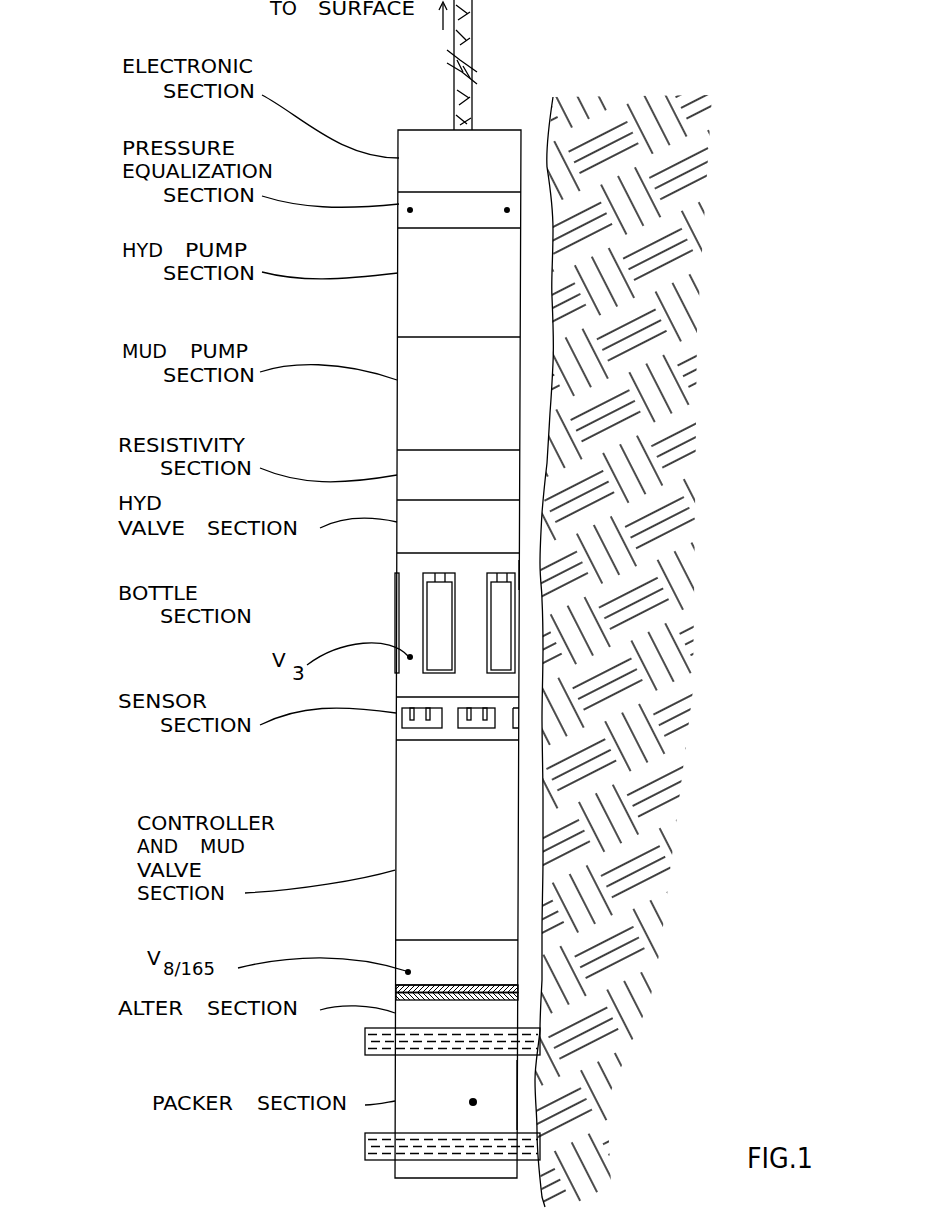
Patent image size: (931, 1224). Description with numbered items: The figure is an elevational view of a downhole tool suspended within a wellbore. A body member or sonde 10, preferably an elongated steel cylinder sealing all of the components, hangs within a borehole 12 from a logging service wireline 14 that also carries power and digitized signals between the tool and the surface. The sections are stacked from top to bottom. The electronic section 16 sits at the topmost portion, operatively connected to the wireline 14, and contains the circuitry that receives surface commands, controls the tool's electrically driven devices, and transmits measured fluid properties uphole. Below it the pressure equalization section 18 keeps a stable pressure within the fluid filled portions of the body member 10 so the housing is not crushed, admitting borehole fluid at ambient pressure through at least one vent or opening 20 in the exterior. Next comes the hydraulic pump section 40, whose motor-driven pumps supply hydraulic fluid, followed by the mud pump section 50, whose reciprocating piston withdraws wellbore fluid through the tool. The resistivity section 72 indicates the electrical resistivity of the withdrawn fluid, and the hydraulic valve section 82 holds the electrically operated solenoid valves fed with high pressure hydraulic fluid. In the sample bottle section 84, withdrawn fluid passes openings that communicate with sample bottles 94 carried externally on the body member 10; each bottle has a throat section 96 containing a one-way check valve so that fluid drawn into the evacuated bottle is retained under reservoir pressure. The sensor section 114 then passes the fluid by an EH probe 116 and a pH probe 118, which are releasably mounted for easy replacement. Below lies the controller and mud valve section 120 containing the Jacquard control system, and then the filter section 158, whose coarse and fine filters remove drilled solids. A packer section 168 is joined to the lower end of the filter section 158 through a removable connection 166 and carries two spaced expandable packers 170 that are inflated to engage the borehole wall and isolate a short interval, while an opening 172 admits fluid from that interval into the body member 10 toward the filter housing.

The body member 10 is at (500, 130).
The borehole 12 is at (548, 198).
The logging service wireline 14 is at (472, 25).
The electronic section 16 is at (473, 175).
The pressure equalization section 18 is at (473, 222).
The vent or opening 20 is at (407, 211).
The hydraulic pump section 40 is at (471, 293).
The mud pump section 50 is at (468, 403).
The resistivity section 72 is at (468, 492).
The hydraulic valve section 82 is at (468, 547).
The sample bottle section 84 is at (513, 575).
The sample bottle 94 is at (503, 618).
The throat section 96 is at (443, 582).
The sensor section 114 is at (519, 732).
The EH probe 116 is at (404, 726).
The pH probe 118 is at (494, 716).
The controller and mud valve section 120 is at (473, 854).
The filter section 158 is at (475, 980).
The removable connection 166 is at (520, 993).
The packer section 168 is at (538, 1093).
The expandable packer 170 is at (540, 1050).
The opening 172 is at (476, 1103).